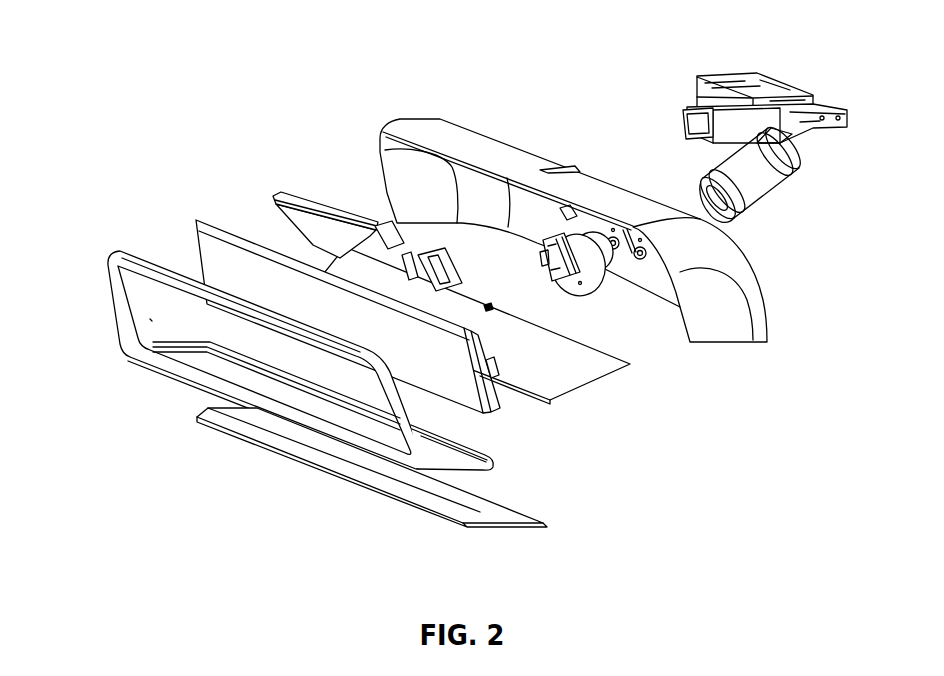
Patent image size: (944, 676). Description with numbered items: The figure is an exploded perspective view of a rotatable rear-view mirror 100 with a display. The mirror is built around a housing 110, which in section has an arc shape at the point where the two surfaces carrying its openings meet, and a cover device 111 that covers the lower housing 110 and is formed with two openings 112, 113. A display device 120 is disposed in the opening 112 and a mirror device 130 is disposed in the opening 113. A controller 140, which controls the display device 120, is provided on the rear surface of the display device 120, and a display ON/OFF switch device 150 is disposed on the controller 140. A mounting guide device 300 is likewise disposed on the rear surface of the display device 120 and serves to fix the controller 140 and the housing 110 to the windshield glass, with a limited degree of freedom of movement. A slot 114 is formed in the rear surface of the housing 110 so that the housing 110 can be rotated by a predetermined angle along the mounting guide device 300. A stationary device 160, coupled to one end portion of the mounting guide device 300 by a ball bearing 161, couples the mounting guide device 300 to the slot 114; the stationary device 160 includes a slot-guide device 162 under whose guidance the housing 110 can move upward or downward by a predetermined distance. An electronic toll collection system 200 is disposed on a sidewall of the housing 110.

The rotatable rear-view mirror 100 is at (376, 33).
The housing 110 is at (573, 200).
The cover device 111 is at (257, 374).
The opening 112 is at (150, 319).
The opening 113 is at (325, 407).
The slot 114 is at (562, 167).
The display device 120 is at (210, 250).
The mirror device 130 is at (390, 497).
The controller 140 is at (550, 402).
The display ON/OFF switch device 150 is at (488, 304).
The stationary device 160 is at (602, 321).
The ball bearing 161 is at (597, 247).
The slot-guide device 162 is at (553, 280).
The electronic toll collection system (ETCS) 200 is at (326, 202).
The mounting guide device 300 is at (808, 153).